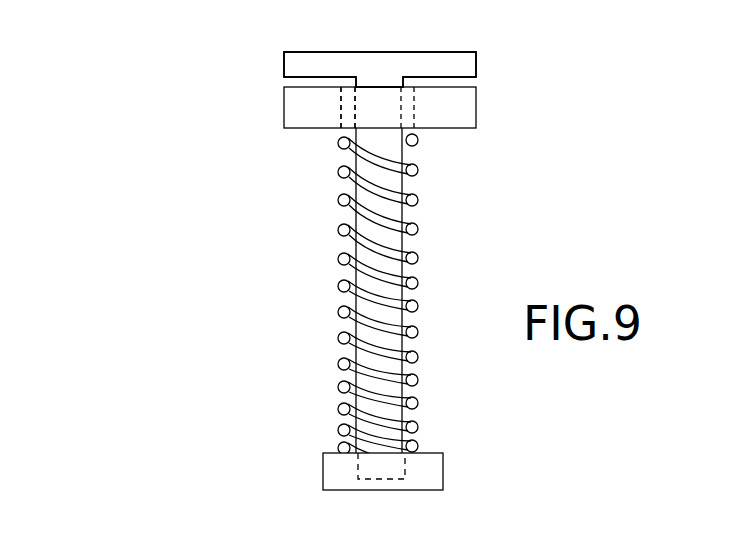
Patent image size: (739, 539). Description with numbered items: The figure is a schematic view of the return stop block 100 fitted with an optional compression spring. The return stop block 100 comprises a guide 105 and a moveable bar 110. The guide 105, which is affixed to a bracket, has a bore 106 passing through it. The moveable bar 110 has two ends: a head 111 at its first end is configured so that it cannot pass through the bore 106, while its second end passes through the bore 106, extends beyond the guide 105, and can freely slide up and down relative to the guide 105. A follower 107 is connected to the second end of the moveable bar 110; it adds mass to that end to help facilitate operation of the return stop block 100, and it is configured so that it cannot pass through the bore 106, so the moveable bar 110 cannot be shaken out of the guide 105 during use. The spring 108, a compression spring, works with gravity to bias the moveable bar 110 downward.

The return stop block 100 is at (90, 203).
The guide 105 is at (462, 109).
The bore 106 is at (342, 104).
The follower 107 is at (433, 469).
The spring 108 is at (415, 253).
The moveable bar 110 is at (391, 69).
The head 111 is at (265, 85).